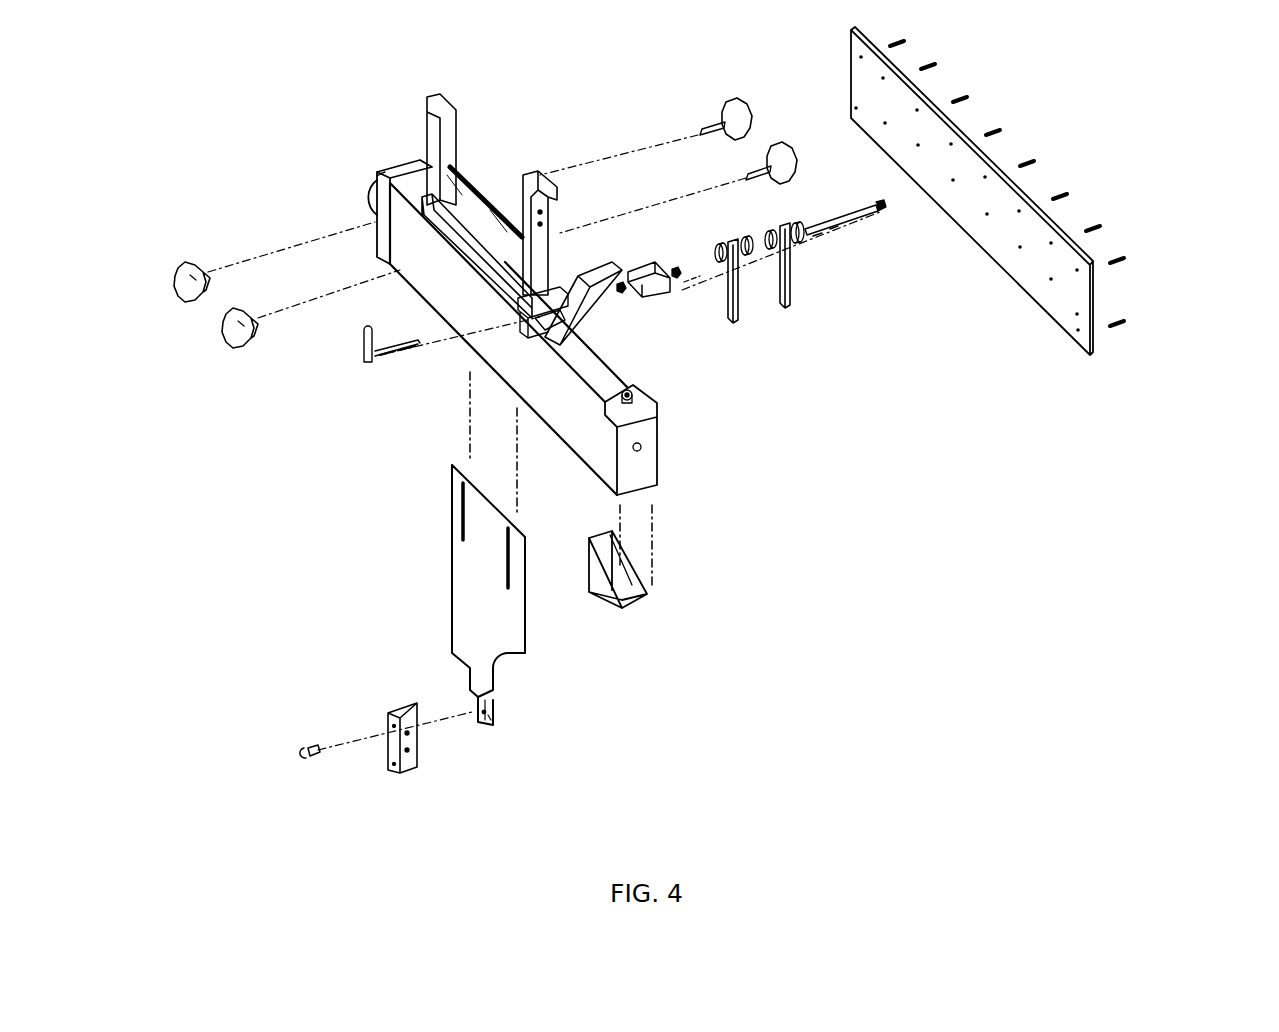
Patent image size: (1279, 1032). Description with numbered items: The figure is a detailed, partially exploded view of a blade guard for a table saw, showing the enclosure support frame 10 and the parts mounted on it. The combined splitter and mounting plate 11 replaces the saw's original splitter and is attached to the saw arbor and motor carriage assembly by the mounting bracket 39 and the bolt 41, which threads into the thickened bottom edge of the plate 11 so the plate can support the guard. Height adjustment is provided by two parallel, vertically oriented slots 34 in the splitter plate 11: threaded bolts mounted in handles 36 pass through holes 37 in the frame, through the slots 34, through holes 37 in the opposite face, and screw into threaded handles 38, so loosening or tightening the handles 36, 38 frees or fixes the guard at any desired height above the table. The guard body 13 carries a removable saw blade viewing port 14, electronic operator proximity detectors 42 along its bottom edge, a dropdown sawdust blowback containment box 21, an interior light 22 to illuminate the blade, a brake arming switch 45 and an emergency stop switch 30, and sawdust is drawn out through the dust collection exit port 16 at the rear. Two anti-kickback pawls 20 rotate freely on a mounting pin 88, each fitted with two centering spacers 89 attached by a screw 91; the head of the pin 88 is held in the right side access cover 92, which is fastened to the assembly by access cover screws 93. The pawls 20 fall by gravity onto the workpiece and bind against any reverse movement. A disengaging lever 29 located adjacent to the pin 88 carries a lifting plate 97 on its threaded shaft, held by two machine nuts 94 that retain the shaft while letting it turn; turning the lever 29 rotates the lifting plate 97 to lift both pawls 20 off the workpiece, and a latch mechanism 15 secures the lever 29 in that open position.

The enclosure support frame 10 is at (438, 94).
The combined splitter and mounting plate 11 is at (468, 585).
The fence body 13 is at (640, 378).
The removable saw blade viewing port 14 is at (587, 357).
The latch mechanism 15 is at (545, 242).
The dust collection exit port 16 is at (375, 185).
The anti-kickback pawls 20 is at (782, 310).
The dropdown sawdust blowback containment box 21 is at (624, 600).
The light 22 is at (560, 325).
The disengaging lever 29 is at (366, 352).
The emergency stop switch 30 is at (640, 446).
The slots 34 is at (502, 548).
The threaded handles 36 is at (780, 147).
The holes 37 is at (462, 207).
The threaded handles 38 is at (235, 333).
The mounting bracket 39 is at (398, 775).
The bolt 41 is at (306, 750).
The electronic operator proximity detectors 42 is at (520, 327).
The brake arming switch 45 is at (631, 392).
The mounting pin 88 is at (880, 210).
The centering spacers 89 is at (800, 248).
The screw 91 is at (815, 237).
The right side access cover 92 is at (1093, 352).
The access cover screws 93 is at (1120, 262).
The machine nuts 94 is at (623, 285).
The lifting plate 97 is at (643, 267).